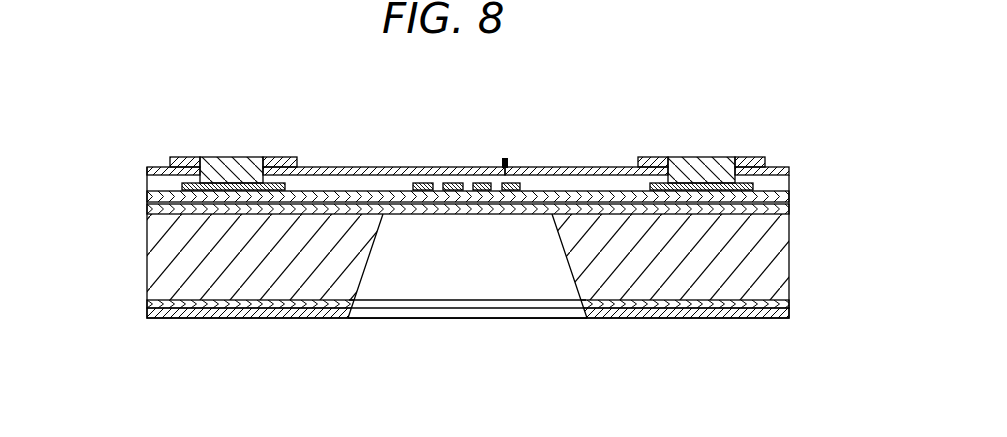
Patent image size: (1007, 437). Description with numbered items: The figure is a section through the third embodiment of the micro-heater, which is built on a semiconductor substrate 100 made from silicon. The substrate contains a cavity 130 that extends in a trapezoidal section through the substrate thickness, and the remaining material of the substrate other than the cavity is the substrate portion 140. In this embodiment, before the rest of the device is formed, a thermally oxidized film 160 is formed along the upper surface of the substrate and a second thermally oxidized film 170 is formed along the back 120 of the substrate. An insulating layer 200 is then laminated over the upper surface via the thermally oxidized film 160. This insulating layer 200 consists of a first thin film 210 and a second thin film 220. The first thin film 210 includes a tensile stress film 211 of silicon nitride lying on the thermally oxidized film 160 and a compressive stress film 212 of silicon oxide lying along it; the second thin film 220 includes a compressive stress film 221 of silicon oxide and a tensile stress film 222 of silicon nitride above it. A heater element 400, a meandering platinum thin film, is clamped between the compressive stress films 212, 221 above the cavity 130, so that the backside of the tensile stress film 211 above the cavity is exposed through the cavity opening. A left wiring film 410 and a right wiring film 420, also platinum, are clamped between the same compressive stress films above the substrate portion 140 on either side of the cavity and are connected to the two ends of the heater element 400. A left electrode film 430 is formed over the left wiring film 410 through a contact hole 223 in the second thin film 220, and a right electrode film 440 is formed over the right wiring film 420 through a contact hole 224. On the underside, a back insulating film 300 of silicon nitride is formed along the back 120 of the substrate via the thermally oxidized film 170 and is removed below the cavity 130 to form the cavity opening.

The semiconductor substrate 100 is at (140, 277).
The back of the semiconductor substrate 120 is at (176, 317).
The cavity 130 is at (383, 267).
The substrate portion 140 is at (778, 260).
The thermally oxidized film 160 is at (147, 212).
The thermally oxidized film 170 is at (147, 308).
The insulating layer 200 is at (162, 162).
The first thin film 210 is at (142, 198).
The tensile stress film 211 is at (427, 190).
The compressive stress film 212 is at (513, 190).
The second thin film 220 is at (143, 182).
The compressive stress film 221 is at (591, 175).
The tensile stress film 222 is at (447, 172).
The contact hole 223 is at (214, 184).
The contact hole 224 is at (680, 185).
The back insulating film 300 is at (305, 326).
The heater element 400 is at (505, 158).
The left wiring film 410 is at (231, 178).
The right wiring film 420 is at (708, 178).
The left electrode film 430 is at (272, 157).
The right electrode film 440 is at (745, 156).